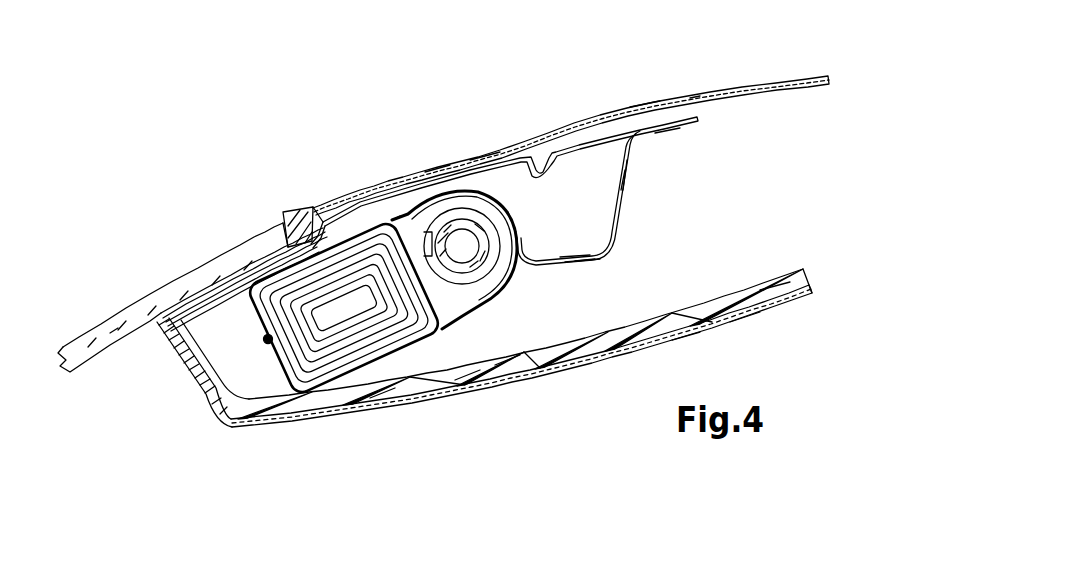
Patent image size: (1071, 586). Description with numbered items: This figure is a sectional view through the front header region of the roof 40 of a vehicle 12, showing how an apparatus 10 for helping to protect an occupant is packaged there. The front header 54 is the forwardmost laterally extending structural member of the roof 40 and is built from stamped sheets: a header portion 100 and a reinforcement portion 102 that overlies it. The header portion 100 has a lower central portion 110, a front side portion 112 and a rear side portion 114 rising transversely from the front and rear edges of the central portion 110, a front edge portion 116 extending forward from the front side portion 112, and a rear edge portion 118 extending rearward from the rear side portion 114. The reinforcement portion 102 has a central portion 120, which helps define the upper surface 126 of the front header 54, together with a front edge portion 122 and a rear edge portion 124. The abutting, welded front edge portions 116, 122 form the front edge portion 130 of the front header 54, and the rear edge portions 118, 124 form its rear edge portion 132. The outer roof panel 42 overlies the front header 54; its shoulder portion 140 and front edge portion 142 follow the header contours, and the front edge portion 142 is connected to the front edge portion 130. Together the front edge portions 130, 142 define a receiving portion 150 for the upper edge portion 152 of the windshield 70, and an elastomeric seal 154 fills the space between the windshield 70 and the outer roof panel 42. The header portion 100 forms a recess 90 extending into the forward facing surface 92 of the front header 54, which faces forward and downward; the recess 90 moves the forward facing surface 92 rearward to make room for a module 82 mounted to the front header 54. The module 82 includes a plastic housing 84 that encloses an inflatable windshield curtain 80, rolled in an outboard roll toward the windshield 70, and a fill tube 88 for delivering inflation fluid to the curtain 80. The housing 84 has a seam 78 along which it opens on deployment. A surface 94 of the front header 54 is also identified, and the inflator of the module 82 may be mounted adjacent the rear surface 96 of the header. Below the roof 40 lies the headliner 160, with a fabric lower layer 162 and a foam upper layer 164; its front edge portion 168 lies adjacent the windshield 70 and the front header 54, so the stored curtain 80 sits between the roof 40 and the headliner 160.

The apparatus 10 is at (522, 353).
The vehicle 12 is at (110, 252).
The roof 40 is at (394, 92).
The outer roof panel 42 is at (597, 116).
The front header 54 is at (622, 200).
The windshield 70 is at (117, 327).
The seam 78 is at (269, 343).
The inflatable windshield curtain 80 is at (322, 396).
The module 82 is at (398, 390).
The housing 84 is at (474, 360).
The fill tube 88 is at (447, 230).
The recess 90 is at (507, 348).
The forward facing surface 92 is at (504, 284).
The surface 94 is at (595, 270).
The rear surface 96 is at (640, 175).
The header portion 100 is at (596, 259).
The reinforcement portion 102 is at (513, 160).
The lower central portion 110 is at (568, 259).
The front side portion 112 is at (510, 215).
The rear side portion 114 is at (622, 178).
The front edge portion 116 is at (212, 322).
The rear edge portion 118 is at (660, 134).
The central portion 120 is at (483, 163).
The front edge portion 122 is at (207, 300).
The rear edge portion 124 is at (643, 128).
The upper surface 126 is at (439, 158).
The front edge portion 130 is at (187, 313).
The rear edge portion 132 is at (693, 113).
The shoulder portion 140 is at (319, 211).
The front edge portion 142 is at (253, 276).
The receiving portion 150 is at (223, 281).
The upper edge portion 152 is at (280, 243).
The elastomeric seal 154 is at (302, 230).
The headliner 160 is at (683, 338).
The lower layer of material 162 is at (743, 320).
The upper layer of material 164 is at (767, 290).
The front edge portion 168 is at (187, 367).